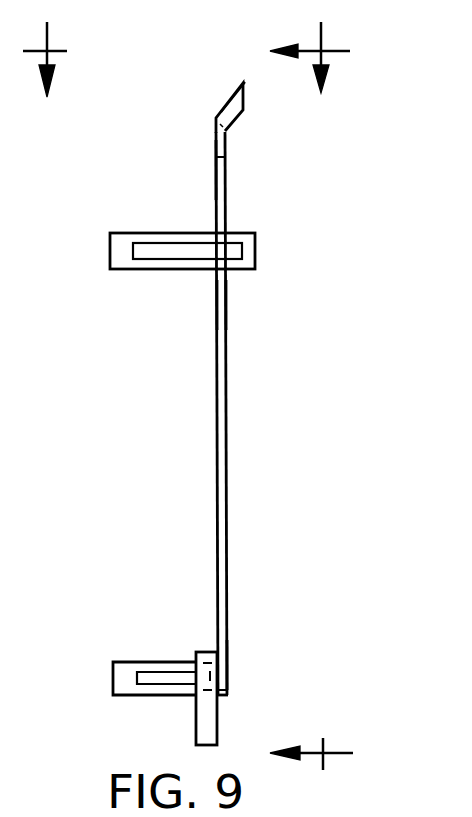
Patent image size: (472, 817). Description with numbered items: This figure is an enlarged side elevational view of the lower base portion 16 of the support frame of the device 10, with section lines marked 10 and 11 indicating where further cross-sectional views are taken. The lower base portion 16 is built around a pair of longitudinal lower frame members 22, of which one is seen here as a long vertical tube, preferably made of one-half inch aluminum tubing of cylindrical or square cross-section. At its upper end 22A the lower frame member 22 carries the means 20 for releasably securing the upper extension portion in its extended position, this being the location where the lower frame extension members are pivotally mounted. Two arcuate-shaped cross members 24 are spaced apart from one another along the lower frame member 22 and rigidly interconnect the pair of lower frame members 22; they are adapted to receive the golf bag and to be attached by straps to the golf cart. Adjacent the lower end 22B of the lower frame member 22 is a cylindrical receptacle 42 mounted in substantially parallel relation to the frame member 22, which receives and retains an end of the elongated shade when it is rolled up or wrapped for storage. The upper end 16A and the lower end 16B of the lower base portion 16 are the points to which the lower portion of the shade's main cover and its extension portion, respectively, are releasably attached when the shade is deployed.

The device 10 is at (332, 404).
The section line 11- 11 is at (192, 48).
The means for releasably securing 20 is at (186, 73).
The lower frame member 22 is at (228, 517).
The upper end of lower frame member 22A is at (228, 140).
The lower end of lower frame member 22B is at (228, 680).
The lower base portion 16 is at (278, 306).
The upper end of lower base portion 16A is at (227, 175).
The lower end of lower base portion 16B is at (228, 643).
The cross member 24 is at (158, 270).
The cylindrical receptacle 42 is at (196, 715).